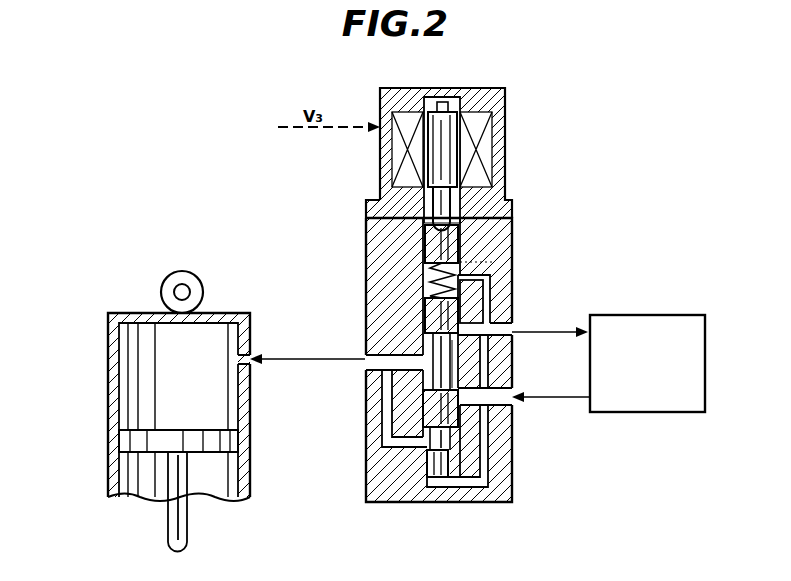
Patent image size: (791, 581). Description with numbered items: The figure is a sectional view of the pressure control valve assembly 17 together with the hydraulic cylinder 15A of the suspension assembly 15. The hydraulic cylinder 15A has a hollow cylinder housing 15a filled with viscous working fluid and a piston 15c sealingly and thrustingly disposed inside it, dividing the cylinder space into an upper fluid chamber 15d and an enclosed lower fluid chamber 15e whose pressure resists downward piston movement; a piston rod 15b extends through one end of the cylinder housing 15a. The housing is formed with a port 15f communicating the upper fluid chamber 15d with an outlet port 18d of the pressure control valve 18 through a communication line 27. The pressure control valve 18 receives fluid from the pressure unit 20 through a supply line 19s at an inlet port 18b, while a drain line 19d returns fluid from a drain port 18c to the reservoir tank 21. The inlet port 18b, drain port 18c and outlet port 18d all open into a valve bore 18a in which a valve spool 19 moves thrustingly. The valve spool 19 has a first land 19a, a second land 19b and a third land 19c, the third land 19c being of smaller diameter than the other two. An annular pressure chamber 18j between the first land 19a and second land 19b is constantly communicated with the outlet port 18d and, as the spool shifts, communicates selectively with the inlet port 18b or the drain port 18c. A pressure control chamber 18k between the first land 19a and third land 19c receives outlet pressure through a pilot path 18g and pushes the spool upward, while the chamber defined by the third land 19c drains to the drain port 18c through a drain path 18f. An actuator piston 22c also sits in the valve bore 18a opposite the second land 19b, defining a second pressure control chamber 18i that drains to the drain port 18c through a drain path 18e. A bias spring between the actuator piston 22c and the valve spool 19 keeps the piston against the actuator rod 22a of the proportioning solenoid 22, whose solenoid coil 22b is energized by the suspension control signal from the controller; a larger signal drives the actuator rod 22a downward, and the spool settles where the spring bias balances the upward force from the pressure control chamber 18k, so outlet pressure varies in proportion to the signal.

The suspension assembly 15 is at (205, 312).
The cylinder housing 15a is at (112, 395).
The hydraulic cylinder 15A is at (100, 437).
The piston rod 15b is at (188, 522).
The piston 15c is at (232, 443).
The upper fluid chamber 15d is at (132, 355).
The lower fluid chamber 15e is at (130, 480).
The port 15f is at (252, 357).
The control valve assembly 17FL~RR 17 is at (528, 206).
The pressure control valve 18 is at (375, 502).
The valve bore 18a is at (425, 290).
The inlet port 18b is at (510, 402).
The drain port 18c is at (493, 325).
The outlet port 18d is at (390, 357).
The drain path 18e is at (488, 283).
The drain path 18f is at (468, 504).
The pilot path 18g is at (405, 447).
The second pressure control chamber 18i is at (467, 262).
The annular pressure chamber 18j is at (485, 335).
The pressure control chamber 18k is at (435, 487).
The valve spool 19 is at (425, 428).
The first land 19a is at (432, 405).
The second land 19b is at (432, 315).
The third land 19c is at (432, 465).
The drain line 19d is at (452, 355).
The supply line 19s is at (522, 397).
The pressure unit 20 is at (637, 315).
The reservoir tank 21 is at (425, 277).
The proportioning solenoid 22 is at (505, 130).
The actuator rod 22a is at (443, 205).
The solenoid coil 22b is at (477, 118).
The actuator piston 22c is at (430, 233).
The communication line 27 is at (284, 362).